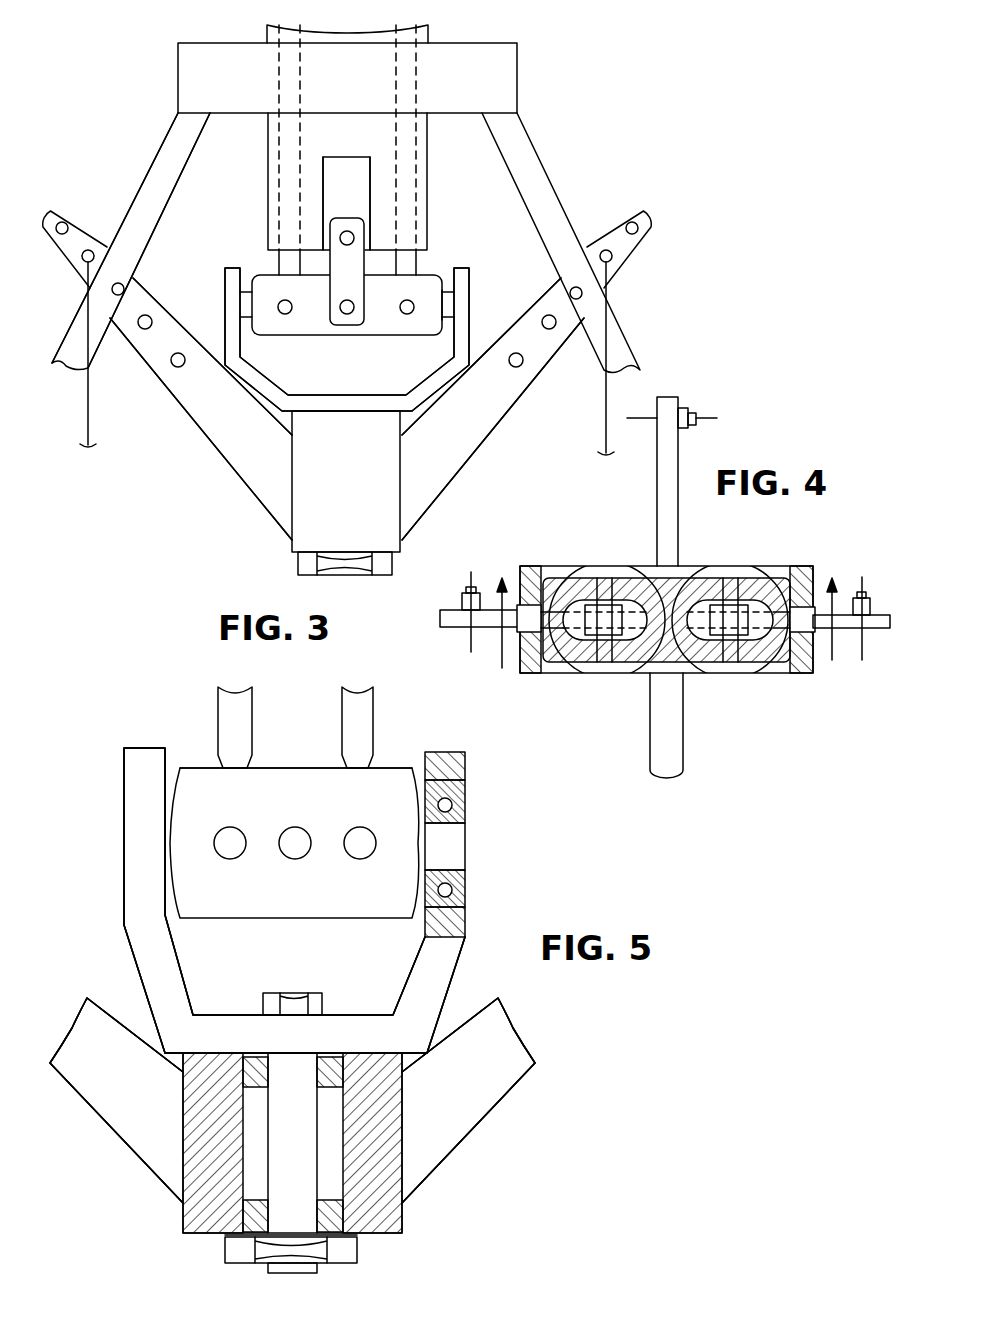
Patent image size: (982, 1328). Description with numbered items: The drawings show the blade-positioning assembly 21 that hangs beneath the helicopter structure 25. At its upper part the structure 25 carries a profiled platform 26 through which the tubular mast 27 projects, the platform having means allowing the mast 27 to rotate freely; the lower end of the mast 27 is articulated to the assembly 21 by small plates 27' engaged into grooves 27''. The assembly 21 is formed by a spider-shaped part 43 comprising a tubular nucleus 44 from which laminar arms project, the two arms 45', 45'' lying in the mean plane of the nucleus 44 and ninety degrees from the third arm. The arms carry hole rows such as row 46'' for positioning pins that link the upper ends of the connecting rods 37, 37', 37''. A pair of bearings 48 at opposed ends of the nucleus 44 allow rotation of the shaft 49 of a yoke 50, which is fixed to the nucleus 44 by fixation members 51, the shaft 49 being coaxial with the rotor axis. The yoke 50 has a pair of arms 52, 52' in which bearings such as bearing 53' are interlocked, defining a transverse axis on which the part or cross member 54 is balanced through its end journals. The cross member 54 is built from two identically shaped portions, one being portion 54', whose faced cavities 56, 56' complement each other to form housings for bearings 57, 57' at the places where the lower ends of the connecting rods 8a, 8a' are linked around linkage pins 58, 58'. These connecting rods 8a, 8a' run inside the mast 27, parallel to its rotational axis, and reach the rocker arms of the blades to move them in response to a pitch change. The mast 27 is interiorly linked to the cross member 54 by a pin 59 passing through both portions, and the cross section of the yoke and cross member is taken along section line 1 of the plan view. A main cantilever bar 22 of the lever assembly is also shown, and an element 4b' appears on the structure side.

In FIG. 3, the assembly 21 is at (515, 218).
In FIG. 5, the assembly 21 is at (125, 1000).
In FIG. 4, the main cantilever bar 22 is at (663, 713).
In FIG. 3, the structure 25 is at (168, 183).
In FIG. 3, the profiled platform 26 is at (487, 85).
In FIG. 3, the tubular mast 27 is at (400, 199).
In FIG. 3, the small plates 27' is at (407, 263).
In FIG. 3, the grooves 27'' is at (319, 137).
In FIG. 3, the connecting rod 8a is at (254, 258).
In FIG. 4, the connecting rod 8a is at (587, 584).
In FIG. 5, the connecting rod 8a is at (210, 722).
In FIG. 3, the connecting rod 8a' is at (442, 253).
In FIG. 4, the connecting rod 8a' is at (733, 584).
In FIG. 5, the connecting rod 8a' is at (386, 727).
In FIG. 3, the yoke 50 is at (212, 280).
In FIG. 5, the yoke 50 is at (123, 875).
In FIG. 3, the arm of yoke 52 is at (357, 339).
In FIG. 4, the arm of yoke 52 is at (660, 594).
In FIG. 5, the arm of yoke 52 is at (271, 900).
In FIG. 4, the arm of yoke 52' is at (831, 638).
In FIG. 5, the arm of yoke 52' is at (469, 825).
In FIG. 5, the bearing 53' is at (476, 791).
In FIG. 3, the part or cross member 54 is at (347, 321).
In FIG. 4, the part or cross member 54 is at (666, 620).
In FIG. 5, the part or cross member 54 is at (294, 863).
In FIG. 3, the portion of cross member 54' is at (420, 329).
In FIG. 5, the portion of cross member 54' is at (296, 757).
In FIG. 4, the cavity 56 is at (607, 587).
In FIG. 4, the cavity 56' is at (762, 592).
In FIG. 4, the bearing 57 is at (607, 636).
In FIG. 4, the bearing 57' is at (730, 636).
In FIG. 3, the linkage pin 58 is at (280, 334).
In FIG. 4, the linkage pin 58 is at (599, 589).
In FIG. 5, the linkage pin 58 is at (233, 824).
In FIG. 3, the linkage pin 58' is at (386, 344).
In FIG. 4, the linkage pin 58' is at (762, 590).
In FIG. 5, the linkage pin 58' is at (353, 824).
In FIG. 4, the pin 59 is at (814, 605).
In FIG. 5, the pin 59 is at (450, 850).
In FIG. 3, the pivot plate 4b' is at (93, 298).
In FIG. 3, the hole row 46'' is at (585, 298).
In FIG. 3, the laminar arm 45' is at (201, 409).
In FIG. 5, the laminar arm 45' is at (115, 1100).
In FIG. 3, the laminar arm 45'' is at (493, 409).
In FIG. 5, the laminar arm 45'' is at (482, 1100).
In FIG. 3, the spider-shaped part 43 is at (243, 480).
In FIG. 5, the spider-shaped part 43 is at (152, 1187).
In FIG. 3, the tubular nucleus 44 is at (317, 508).
In FIG. 5, the tubular nucleus 44 is at (365, 1205).
In FIG. 5, the bearing 48 is at (333, 1072).
In FIG. 5, the shaft 49 is at (248, 1180).
In FIG. 3, the fixation member 51 is at (333, 563).
In FIG. 4, the connecting rod 37 is at (677, 401).
In FIG. 4, the connecting rod 37' is at (458, 590).
In FIG. 4, the connecting rod 37'' is at (885, 604).
In FIG. 4, the section line 1 is at (672, 604).